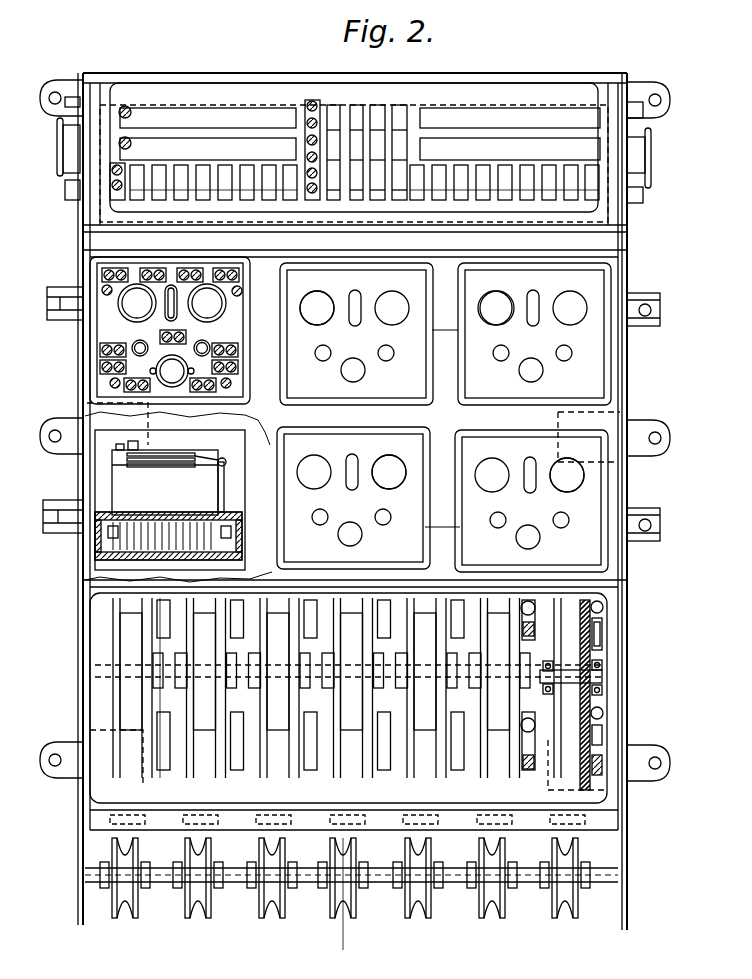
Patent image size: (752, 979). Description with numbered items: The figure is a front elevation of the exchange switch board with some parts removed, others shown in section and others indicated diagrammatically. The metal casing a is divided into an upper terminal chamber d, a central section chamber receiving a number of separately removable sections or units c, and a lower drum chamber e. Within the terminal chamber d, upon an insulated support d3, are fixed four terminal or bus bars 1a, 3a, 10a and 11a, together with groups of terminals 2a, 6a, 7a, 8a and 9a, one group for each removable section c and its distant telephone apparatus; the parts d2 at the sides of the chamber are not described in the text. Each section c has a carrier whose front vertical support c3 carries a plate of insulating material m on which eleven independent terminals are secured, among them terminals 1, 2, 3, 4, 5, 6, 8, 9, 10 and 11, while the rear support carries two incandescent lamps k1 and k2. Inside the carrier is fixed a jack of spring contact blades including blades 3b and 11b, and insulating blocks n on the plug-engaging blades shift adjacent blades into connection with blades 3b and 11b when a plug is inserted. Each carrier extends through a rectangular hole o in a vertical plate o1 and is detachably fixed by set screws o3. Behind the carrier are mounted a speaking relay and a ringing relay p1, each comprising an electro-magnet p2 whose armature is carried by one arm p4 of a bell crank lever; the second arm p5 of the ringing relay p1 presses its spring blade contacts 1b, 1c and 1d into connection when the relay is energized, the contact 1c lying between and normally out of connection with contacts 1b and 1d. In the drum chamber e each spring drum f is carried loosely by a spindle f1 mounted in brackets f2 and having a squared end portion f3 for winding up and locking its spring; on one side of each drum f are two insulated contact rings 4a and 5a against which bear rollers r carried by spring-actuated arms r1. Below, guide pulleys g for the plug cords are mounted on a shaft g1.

The metal casing a is at (83, 890).
The upper chamber d is at (508, 100).
The handle d2 is at (60, 148).
The insulated support d3 is at (205, 100).
The terminal or bus bar 10a is at (208, 118).
The terminal or bus bar 11a is at (208, 149).
The terminal or bus bar 1a is at (510, 118).
The terminal or bus bar 3a is at (510, 149).
The terminal 2a is at (400, 105).
The terminal 6a is at (312, 102).
The terminal 7a is at (334, 105).
The terminal 8a is at (356, 105).
The terminal 9a is at (378, 105).
The independent terminal 3 is at (152, 272).
The independent terminal 10 is at (190, 272).
The independent terminal 11 is at (228, 273).
The plate of insulating material m is at (225, 332).
The independent terminal 1 is at (98, 337).
The independent terminal 2 is at (98, 273).
The independent terminal 4 is at (100, 367).
The independent terminal 5 is at (243, 394).
The independent terminal 6 is at (100, 348).
The independent terminal 8 is at (124, 388).
The independent terminal 9 is at (238, 348).
The set screw o3 is at (110, 383).
The incandescent electric lamp k1 is at (207, 303).
The incandescent electric lamp k2 is at (137, 303).
The insulating block n is at (172, 371).
The removable section or unit c is at (226, 517).
The front vertical support c3 is at (441, 413).
The rectangular hole o is at (361, 429).
The vertical plate o1 is at (447, 273).
The ringing relay p1 is at (107, 480).
The electro-magnet p2 is at (165, 478).
The bell crank lever arm p4 is at (228, 500).
The second arm of bell crank lever p5 is at (220, 458).
The spring blade contact 1b is at (183, 461).
The spring blade contact 1c is at (172, 449).
The spring blade contact 1d is at (140, 467).
The spring contact blade 11b is at (130, 535).
The spring contact blade 3b is at (197, 537).
The contact drum f is at (137, 685).
The spindle f1 is at (163, 733).
The bracket f2 is at (162, 660).
The squared end portion f3 is at (605, 680).
The contact ball or roller r is at (531, 604).
The spring-actuated arm r1 is at (533, 632).
The insulated contact ring 4a is at (602, 648).
The insulated contact ring 5a is at (603, 607).
The lower chamber e is at (351, 867).
The guide pulley g is at (127, 895).
The shaft g1 is at (458, 883).